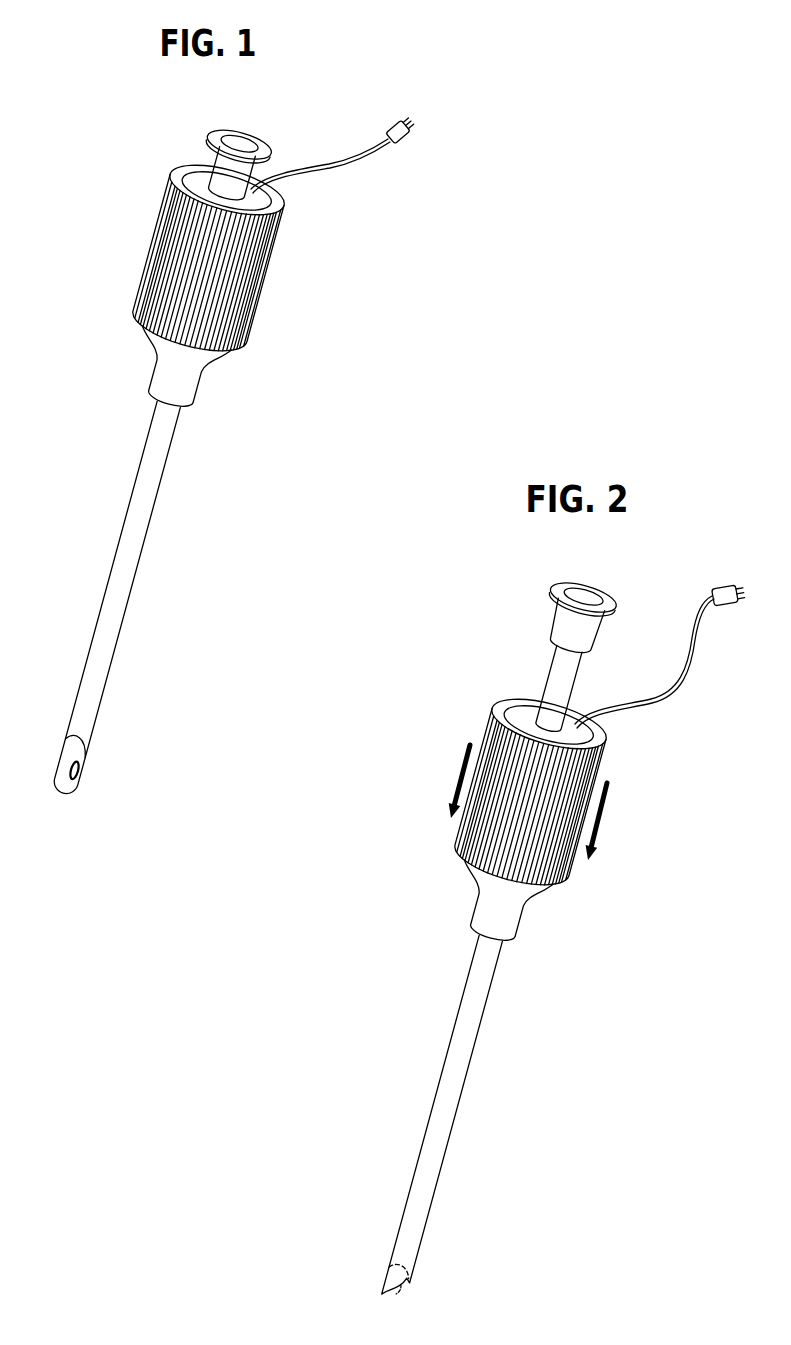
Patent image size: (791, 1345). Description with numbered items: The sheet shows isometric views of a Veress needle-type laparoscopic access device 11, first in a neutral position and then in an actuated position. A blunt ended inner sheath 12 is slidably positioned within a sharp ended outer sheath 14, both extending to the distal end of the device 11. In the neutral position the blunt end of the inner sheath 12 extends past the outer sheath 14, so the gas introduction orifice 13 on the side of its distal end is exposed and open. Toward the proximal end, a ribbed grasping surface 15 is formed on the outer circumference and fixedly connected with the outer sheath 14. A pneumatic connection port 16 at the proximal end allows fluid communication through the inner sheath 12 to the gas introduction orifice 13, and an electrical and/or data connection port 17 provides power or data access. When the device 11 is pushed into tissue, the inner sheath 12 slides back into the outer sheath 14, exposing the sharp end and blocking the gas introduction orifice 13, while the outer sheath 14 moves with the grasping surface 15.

In FIG. 1, the laparoscopic access device 11 is at (80, 336).
In FIG. 2, the laparoscopic access device 11 is at (427, 790).
In FIG. 1, the inner sheath 12 is at (98, 748).
In FIG. 2, the inner sheath 12 is at (433, 1216).
In FIG. 1, the gas introduction orifice 13 is at (88, 772).
In FIG. 2, the gas introduction orifice 13 is at (423, 1243).
In FIG. 1, the outer sheath 14 is at (181, 456).
In FIG. 2, the outer sheath 14 is at (510, 972).
In FIG. 1, the grasping surface 15 is at (274, 279).
In FIG. 2, the grasping surface 15 is at (498, 702).
In FIG. 1, the pneumatic connection port 16 is at (250, 139).
In FIG. 2, the pneumatic connection port 16 is at (593, 594).
In FIG. 1, the electrical and/or data connection port 17 is at (405, 154).
In FIG. 2, the electrical and/or data connection port 17 is at (737, 612).